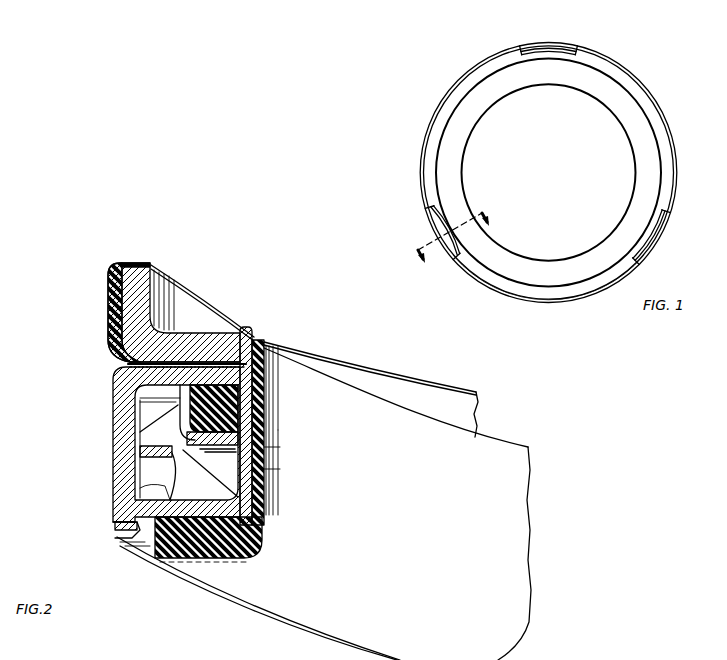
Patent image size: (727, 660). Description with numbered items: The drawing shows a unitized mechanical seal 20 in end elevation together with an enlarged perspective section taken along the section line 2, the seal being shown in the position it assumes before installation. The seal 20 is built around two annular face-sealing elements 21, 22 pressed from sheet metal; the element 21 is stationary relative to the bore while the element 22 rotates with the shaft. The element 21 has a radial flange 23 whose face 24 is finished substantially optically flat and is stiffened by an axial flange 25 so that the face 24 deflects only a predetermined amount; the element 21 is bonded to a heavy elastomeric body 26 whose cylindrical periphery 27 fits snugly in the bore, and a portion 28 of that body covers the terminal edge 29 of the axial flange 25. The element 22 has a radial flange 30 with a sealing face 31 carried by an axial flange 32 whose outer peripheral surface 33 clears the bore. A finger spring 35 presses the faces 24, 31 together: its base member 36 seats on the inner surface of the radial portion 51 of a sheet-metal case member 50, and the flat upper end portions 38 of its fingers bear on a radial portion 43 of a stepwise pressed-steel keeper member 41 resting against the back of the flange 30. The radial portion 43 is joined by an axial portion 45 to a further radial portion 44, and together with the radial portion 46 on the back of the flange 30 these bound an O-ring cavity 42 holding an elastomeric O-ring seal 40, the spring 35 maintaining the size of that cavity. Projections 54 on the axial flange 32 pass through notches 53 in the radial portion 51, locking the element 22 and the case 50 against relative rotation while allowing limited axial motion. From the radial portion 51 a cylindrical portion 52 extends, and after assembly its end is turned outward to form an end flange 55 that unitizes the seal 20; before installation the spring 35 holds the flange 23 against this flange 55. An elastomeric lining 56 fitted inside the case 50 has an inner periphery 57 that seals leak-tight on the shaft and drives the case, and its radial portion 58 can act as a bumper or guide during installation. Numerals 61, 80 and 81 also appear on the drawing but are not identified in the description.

In FIG. 1, the section line 2 is at (457, 244).
In FIG. 1, the unitized mechanical seal 20 is at (415, 170).
In FIG. 2, the unitized mechanical seal 20 is at (485, 428).
In FIG. 2, the face sealing element 21 is at (194, 300).
In FIG. 2, the face sealing element 22 is at (102, 450).
In FIG. 2, the radial flange 23 is at (259, 343).
In FIG. 2, the face 24 is at (260, 380).
In FIG. 2, the axial flange 25 is at (150, 290).
In FIG. 1, the elastomeric body 26 is at (450, 91).
In FIG. 2, the elastomeric body 26 is at (110, 300).
In FIG. 1, the cylindrical periphery 27 is at (430, 128).
In FIG. 2, the cylindrical periphery 27 is at (110, 318).
In FIG. 2, the portion of elastomeric body 28 is at (127, 264).
In FIG. 2, the terminal edge 29 is at (138, 265).
In FIG. 2, the radial flange 30 is at (268, 356).
In FIG. 2, the sealing face 31 is at (210, 358).
In FIG. 2, the axial flange 32 is at (115, 497).
In FIG. 2, the outer peripheral surface 33 is at (116, 476).
In FIG. 2, the finger spring 35 is at (180, 457).
In FIG. 2, the base member 36 is at (197, 499).
In FIG. 2, the upper end portion 38 is at (178, 396).
In FIG. 2, the O-ring seal 40 is at (268, 400).
In FIG. 2, the keeper member 41 is at (148, 425).
In FIG. 2, the O-ring cavity 42 is at (280, 410).
In FIG. 2, the radial portion 43 is at (148, 394).
In FIG. 2, the radial portion 44 is at (268, 430).
In FIG. 2, the axial portion 45 is at (200, 417).
In FIG. 2, the radial portion 46 is at (270, 360).
In FIG. 2, the case member 50 is at (270, 469).
In FIG. 1, the radial portion 51 is at (496, 285).
In FIG. 2, the radial portion 51 is at (200, 540).
In FIG. 2, the cylindrical portion 52 is at (268, 448).
In FIG. 1, the notches 53 is at (583, 47).
In FIG. 2, the notches 53 is at (122, 528).
In FIG. 1, the projections 54 is at (537, 44).
In FIG. 2, the projections 54 is at (122, 540).
In FIG. 2, the end flange 55 is at (245, 330).
In FIG. 2, the elastomeric lining 56 is at (266, 536).
In FIG. 1, the inner periphery 57 is at (463, 190).
In FIG. 2, the inner periphery 57 is at (266, 489).
In FIG. 2, the radial portion 58 is at (173, 555).
In FIG. 2, the lower surface 61 is at (258, 603).
In FIG. 2, the interface line 80 is at (130, 363).
In FIG. 2, the interface line 81 is at (135, 367).